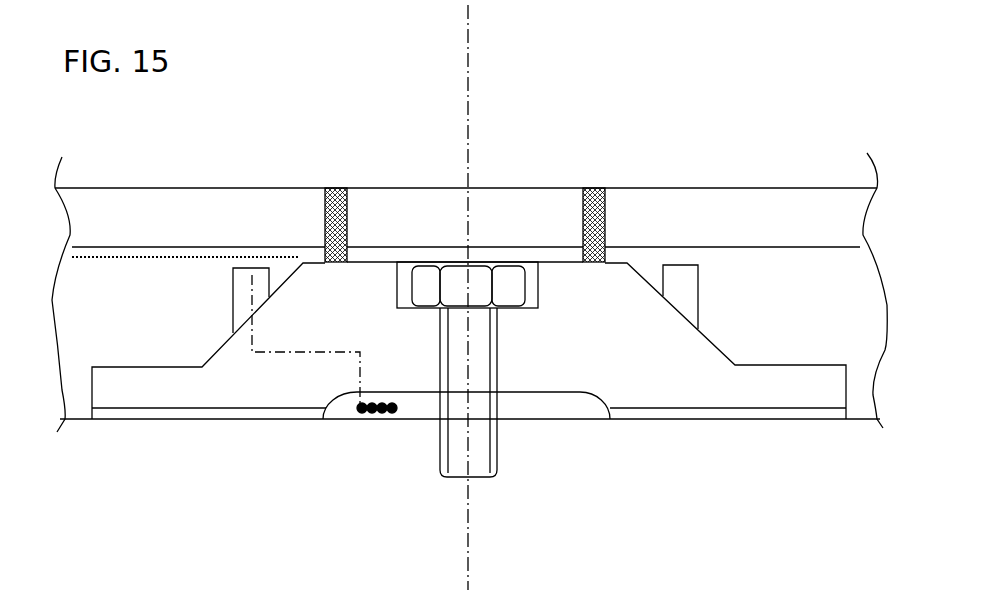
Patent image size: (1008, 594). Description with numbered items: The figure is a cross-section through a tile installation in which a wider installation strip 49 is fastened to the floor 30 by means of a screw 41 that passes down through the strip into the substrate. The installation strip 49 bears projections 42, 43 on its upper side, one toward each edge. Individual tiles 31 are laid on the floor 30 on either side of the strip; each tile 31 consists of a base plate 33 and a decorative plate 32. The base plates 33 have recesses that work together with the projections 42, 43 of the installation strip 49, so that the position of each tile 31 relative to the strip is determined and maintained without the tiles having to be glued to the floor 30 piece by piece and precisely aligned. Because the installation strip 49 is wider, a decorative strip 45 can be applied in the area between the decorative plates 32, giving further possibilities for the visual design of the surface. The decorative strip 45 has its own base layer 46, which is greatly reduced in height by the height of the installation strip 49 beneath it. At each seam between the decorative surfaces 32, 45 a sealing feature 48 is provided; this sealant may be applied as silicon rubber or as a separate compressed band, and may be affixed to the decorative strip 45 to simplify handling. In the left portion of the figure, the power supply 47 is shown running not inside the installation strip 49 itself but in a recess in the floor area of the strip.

The floor 30 is at (635, 470).
The tile 31 is at (222, 145).
The decorative plate 32 is at (202, 231).
The base plate 33 is at (795, 318).
The screw 41 is at (460, 422).
The projection 42 is at (683, 275).
The projection 43 is at (245, 278).
The decorative strip 45 is at (547, 228).
The base layer 46 is at (360, 252).
The power supply 47 is at (375, 412).
The sealing feature 48 is at (600, 200).
The installation strip 49 is at (630, 350).